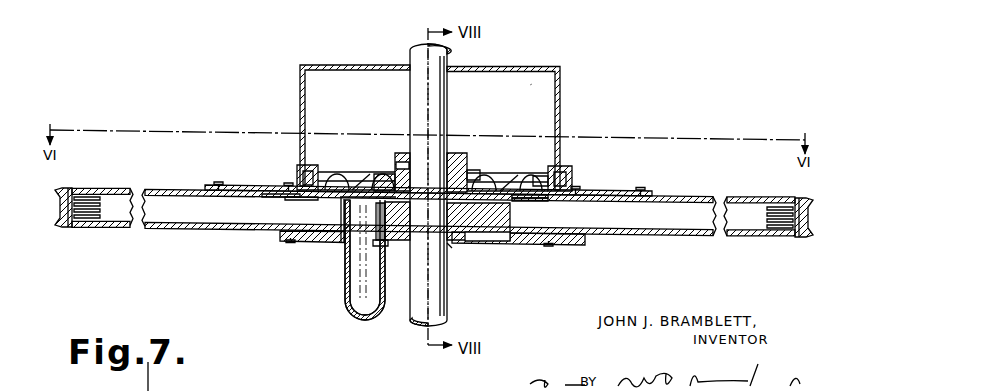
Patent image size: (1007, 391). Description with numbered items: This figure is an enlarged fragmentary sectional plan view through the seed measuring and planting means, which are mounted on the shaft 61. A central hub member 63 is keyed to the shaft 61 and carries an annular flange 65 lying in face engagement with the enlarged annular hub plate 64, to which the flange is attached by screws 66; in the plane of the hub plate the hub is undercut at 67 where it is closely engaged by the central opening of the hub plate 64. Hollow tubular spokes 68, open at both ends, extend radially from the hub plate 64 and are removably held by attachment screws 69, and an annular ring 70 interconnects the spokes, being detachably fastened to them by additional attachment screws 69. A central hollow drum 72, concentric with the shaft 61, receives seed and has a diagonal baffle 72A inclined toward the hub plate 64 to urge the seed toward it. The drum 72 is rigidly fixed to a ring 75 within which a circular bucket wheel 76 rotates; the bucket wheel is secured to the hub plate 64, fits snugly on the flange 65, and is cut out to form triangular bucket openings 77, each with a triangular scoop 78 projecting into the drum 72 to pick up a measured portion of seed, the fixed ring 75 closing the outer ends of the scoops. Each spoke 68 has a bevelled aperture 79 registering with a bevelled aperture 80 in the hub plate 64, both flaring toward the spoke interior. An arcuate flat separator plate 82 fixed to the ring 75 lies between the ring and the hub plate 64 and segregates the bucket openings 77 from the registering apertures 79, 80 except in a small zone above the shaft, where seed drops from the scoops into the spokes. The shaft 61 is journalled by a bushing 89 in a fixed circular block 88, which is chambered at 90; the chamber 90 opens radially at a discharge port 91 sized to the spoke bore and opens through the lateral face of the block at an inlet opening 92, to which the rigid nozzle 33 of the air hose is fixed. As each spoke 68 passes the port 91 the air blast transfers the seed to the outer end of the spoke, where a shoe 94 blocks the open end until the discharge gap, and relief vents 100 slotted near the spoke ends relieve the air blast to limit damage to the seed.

The rigid nozzle portion 33 is at (346, 303).
The shaft 61 is at (417, 96).
The central hub member 63 is at (455, 168).
The annular hub plate 64 is at (610, 190).
The annular flange 65 is at (387, 174).
The screws 66 is at (478, 172).
The undercut 67 is at (449, 205).
The hollow tubular spokes 68 is at (108, 188).
The attachment screws 69 is at (219, 184).
The annular ring 70 is at (581, 246).
The central hollow drum 72 is at (560, 109).
The diagonally disposed baffle 72A is at (530, 85).
The ring 75 is at (300, 168).
The circular bucket wheel 76 is at (332, 167).
The bucket openings 77 is at (546, 176).
The triangular scoop 78 is at (526, 176).
The spoke aperture 79 is at (288, 197).
The hub plate apertures 80 is at (296, 199).
The arcuate flat separator plate 82 is at (300, 180).
The fixed circular block 88 is at (462, 246).
The bushing 89 is at (451, 246).
The chamber 90 is at (345, 243).
The radial opening 91 is at (345, 214).
The chamber opening 92 is at (384, 240).
The shoe 94 is at (62, 191).
The relief vents 100 is at (88, 215).